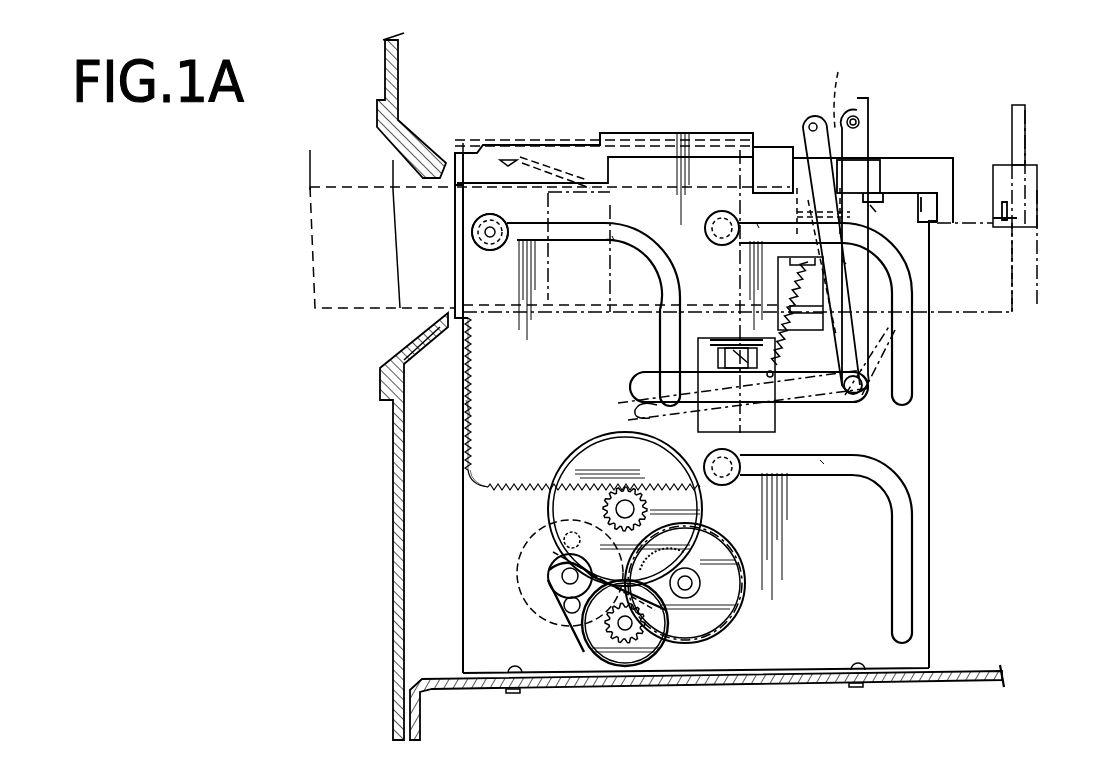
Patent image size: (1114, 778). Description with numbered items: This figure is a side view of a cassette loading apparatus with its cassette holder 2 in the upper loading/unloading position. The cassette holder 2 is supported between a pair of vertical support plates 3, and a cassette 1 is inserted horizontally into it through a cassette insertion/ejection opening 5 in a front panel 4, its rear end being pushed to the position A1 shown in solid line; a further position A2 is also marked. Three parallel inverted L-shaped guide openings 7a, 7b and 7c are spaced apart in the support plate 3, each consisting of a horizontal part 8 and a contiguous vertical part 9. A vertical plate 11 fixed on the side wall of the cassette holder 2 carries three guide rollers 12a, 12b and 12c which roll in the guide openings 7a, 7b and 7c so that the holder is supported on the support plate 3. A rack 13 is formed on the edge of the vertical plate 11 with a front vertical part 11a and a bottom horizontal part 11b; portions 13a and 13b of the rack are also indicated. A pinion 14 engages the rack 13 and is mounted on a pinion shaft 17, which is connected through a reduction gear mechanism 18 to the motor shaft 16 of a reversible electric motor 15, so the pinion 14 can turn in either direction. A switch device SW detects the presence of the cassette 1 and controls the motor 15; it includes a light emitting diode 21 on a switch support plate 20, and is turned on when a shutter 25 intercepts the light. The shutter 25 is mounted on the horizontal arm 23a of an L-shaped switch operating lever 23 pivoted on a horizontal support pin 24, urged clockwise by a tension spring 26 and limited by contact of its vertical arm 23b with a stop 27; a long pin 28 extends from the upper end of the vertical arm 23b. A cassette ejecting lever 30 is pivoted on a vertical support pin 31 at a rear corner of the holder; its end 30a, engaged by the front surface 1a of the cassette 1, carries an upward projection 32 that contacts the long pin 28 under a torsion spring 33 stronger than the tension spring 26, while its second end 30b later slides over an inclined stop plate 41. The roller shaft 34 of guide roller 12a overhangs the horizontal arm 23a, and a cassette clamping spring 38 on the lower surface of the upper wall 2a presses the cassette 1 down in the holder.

The cassette 1 is at (393, 255).
The front surface of cassette 1a is at (842, 262).
The cassette holder 2 is at (457, 150).
The upper wall of cassette holder 2a is at (464, 150).
The vertical support plate 3 is at (922, 450).
The front panel 4 is at (400, 493).
The cassette insertion/ejection opening 5 is at (410, 350).
The guide opening 7a is at (548, 242).
The guide opening 7b is at (903, 357).
The guide opening 7c is at (905, 583).
The horizontal part 8 is at (612, 238).
The vertical part 9 is at (660, 333).
The vertical plate 11 is at (540, 140).
The front vertical part 11a is at (465, 352).
The bottom horizontal part 11b is at (511, 497).
The guide roller 12a is at (473, 243).
The guide roller 12b is at (705, 226).
The guide roller 12c is at (722, 472).
The rack 13 is at (461, 485).
The rack portion 13a is at (472, 487).
The rack portion 13b is at (467, 408).
The pinion 14 is at (653, 495).
The reversible electric motor 15 is at (518, 578).
The motor shaft 16 is at (568, 578).
The pinion shaft 17 is at (618, 505).
The reduction gear mechanism 18 is at (648, 630).
The switch support plate 20 is at (722, 345).
The light emitting diode 21 is at (742, 363).
The switch operating lever 23 is at (820, 400).
The horizontal arm 23a is at (630, 402).
The vertical arm 23b is at (850, 316).
The horizontal support pin 24 is at (862, 394).
The shutter 25 is at (642, 378).
The tension spring 26 is at (796, 317).
The stop 27 is at (877, 190).
The long pin 28 is at (812, 122).
The cassette ejecting lever 30 is at (868, 172).
The end of cassette ejecting lever 30a is at (850, 85).
The second end of cassette ejecting lever 30b is at (870, 210).
The vertical support pin 31 is at (875, 160).
The upward projection 32 is at (866, 110).
The torsion spring 33 is at (808, 195).
The roller shaft 34 is at (492, 230).
The cassette clamping spring 38 is at (575, 172).
The stop plate 41 is at (938, 205).
The switch device SW is at (740, 327).
The position A1 is at (374, 175).
The second position A2 is at (290, 174).